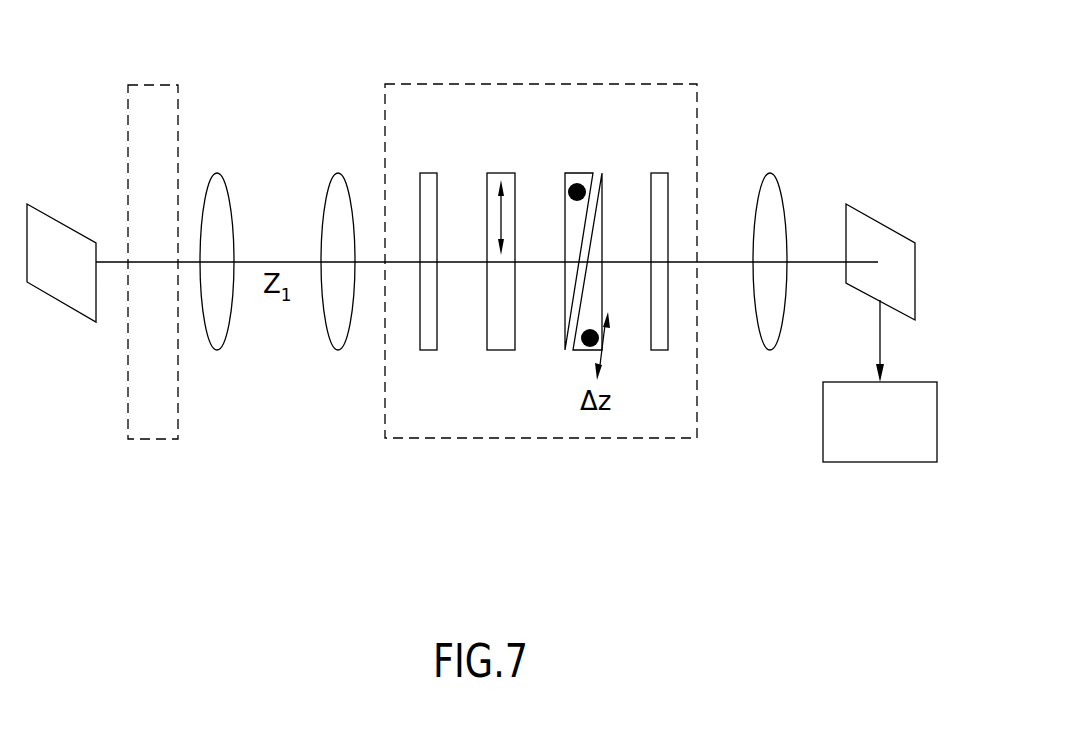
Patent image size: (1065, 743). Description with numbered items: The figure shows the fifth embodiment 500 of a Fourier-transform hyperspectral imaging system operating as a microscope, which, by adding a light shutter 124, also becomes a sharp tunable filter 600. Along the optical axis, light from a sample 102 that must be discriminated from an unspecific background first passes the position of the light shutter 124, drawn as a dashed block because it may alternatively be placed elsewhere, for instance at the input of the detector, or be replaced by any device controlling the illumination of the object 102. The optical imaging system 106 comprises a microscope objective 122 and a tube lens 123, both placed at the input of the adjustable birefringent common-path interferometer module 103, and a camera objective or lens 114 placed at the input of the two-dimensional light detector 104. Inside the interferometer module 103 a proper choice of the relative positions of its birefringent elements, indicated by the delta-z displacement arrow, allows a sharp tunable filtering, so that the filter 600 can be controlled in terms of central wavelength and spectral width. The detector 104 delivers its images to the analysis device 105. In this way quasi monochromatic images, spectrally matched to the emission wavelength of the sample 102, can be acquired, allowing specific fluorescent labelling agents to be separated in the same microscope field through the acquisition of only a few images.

The sample 102 is at (51, 215).
The adjustable birefringent common-path interferometer module 103 is at (662, 76).
The two-dimensional light detector 104 is at (877, 220).
The analysis device 105 is at (823, 422).
The optical imaging system 106 is at (516, 88).
The camera objective or lens 114 is at (783, 197).
The microscope objective 122 is at (230, 197).
The tube lens 123 is at (325, 197).
The light shutter 124 is at (150, 440).
The fifth embodiment 500 is at (501, 47).
The sharp tunable filter 600 is at (560, 47).